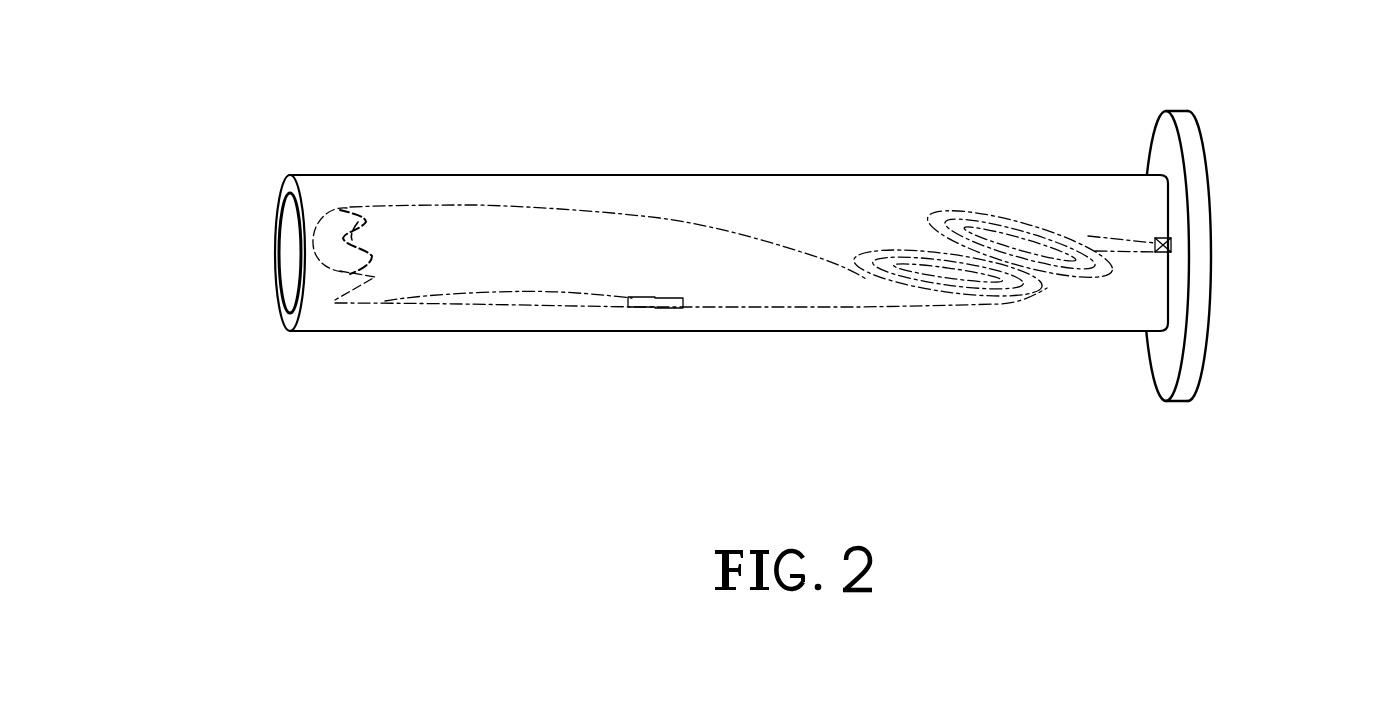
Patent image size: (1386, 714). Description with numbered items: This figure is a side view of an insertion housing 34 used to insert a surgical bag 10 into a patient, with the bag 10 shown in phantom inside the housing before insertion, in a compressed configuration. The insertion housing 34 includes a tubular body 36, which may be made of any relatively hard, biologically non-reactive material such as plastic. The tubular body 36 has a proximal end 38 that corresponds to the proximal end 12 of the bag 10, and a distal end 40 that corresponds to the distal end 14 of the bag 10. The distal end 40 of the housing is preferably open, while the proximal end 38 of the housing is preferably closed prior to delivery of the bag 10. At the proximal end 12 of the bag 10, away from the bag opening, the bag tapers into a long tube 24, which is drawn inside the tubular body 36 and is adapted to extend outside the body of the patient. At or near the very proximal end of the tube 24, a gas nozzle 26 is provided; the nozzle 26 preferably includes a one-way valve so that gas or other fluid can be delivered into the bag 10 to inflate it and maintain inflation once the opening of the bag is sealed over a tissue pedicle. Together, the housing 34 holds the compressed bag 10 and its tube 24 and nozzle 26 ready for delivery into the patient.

The bag 10 is at (645, 216).
The proximal end of the bag 12 is at (1162, 201).
The distal end of the bag 14 is at (347, 198).
The tube 24 is at (1006, 190).
The gas nozzle 26 is at (1165, 254).
The insertion housing 34 is at (898, 155).
The tubular body 36 is at (760, 331).
The proximal end of the housing 38 is at (1248, 266).
The distal end of the housing 40 is at (246, 302).